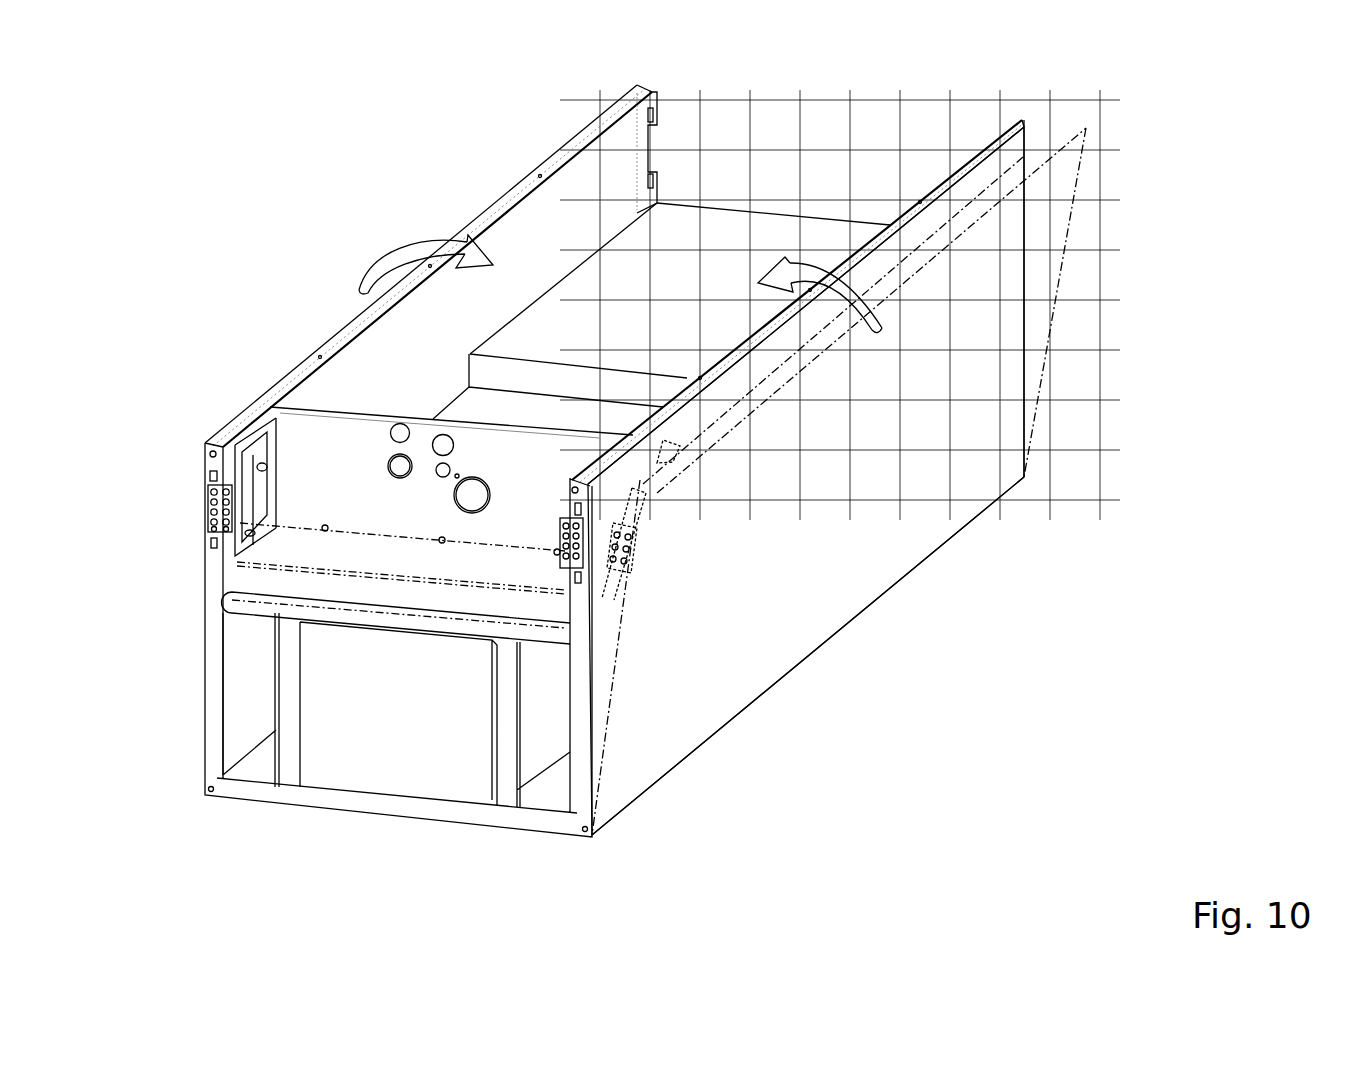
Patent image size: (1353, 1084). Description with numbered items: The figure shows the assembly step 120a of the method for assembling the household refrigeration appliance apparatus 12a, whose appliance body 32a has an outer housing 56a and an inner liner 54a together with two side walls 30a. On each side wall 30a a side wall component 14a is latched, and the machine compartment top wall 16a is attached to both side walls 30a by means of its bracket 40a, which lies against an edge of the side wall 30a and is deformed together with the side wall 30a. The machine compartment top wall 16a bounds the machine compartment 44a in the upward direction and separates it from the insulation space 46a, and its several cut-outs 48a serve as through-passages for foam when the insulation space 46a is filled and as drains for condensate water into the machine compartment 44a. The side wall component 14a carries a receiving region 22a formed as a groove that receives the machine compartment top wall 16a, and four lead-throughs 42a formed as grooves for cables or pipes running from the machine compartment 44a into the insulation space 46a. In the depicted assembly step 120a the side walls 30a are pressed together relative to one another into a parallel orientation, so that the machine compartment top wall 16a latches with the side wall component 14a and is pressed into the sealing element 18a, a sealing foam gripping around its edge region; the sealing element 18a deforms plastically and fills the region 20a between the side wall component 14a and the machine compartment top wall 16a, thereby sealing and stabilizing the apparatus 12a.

The assembly step 120a is at (270, 218).
The household refrigeration appliance apparatus 12a is at (855, 665).
The side wall component 14a is at (277, 448).
The machine compartment top wall 16a is at (343, 482).
The sealing element 18a is at (236, 602).
The region 20a is at (228, 546).
The receiving region 22a is at (236, 581).
The side wall 30a is at (824, 546).
The appliance body 32a is at (678, 810).
The bracket 40a is at (268, 403).
The lead-through 42a is at (273, 468).
The machine compartment 44a is at (248, 400).
The insulation space 46a is at (679, 155).
The cut-out 48a is at (470, 497).
The inner liner 54a is at (800, 240).
The outer housing 56a is at (948, 483).